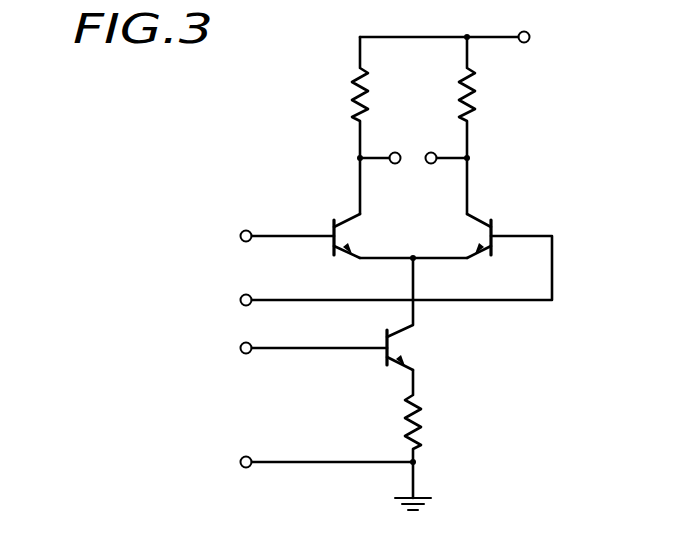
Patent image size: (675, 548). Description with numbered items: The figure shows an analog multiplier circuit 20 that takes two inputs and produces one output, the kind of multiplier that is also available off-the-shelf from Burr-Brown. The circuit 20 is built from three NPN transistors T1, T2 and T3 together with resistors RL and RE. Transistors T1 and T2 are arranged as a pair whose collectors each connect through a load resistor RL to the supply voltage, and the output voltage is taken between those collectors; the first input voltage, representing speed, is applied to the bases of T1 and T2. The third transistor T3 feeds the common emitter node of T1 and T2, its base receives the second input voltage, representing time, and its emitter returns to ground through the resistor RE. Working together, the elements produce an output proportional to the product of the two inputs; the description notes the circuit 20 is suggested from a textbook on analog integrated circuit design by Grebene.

The differential amplifier circuit 20 is at (149, 90).
The NPN transistor T1 is at (361, 236).
The NPN transistor T2 is at (465, 236).
The NPN transistor T3 is at (418, 350).
The load resistor RL is at (418, 125).
The emitter resistor RE is at (426, 434).